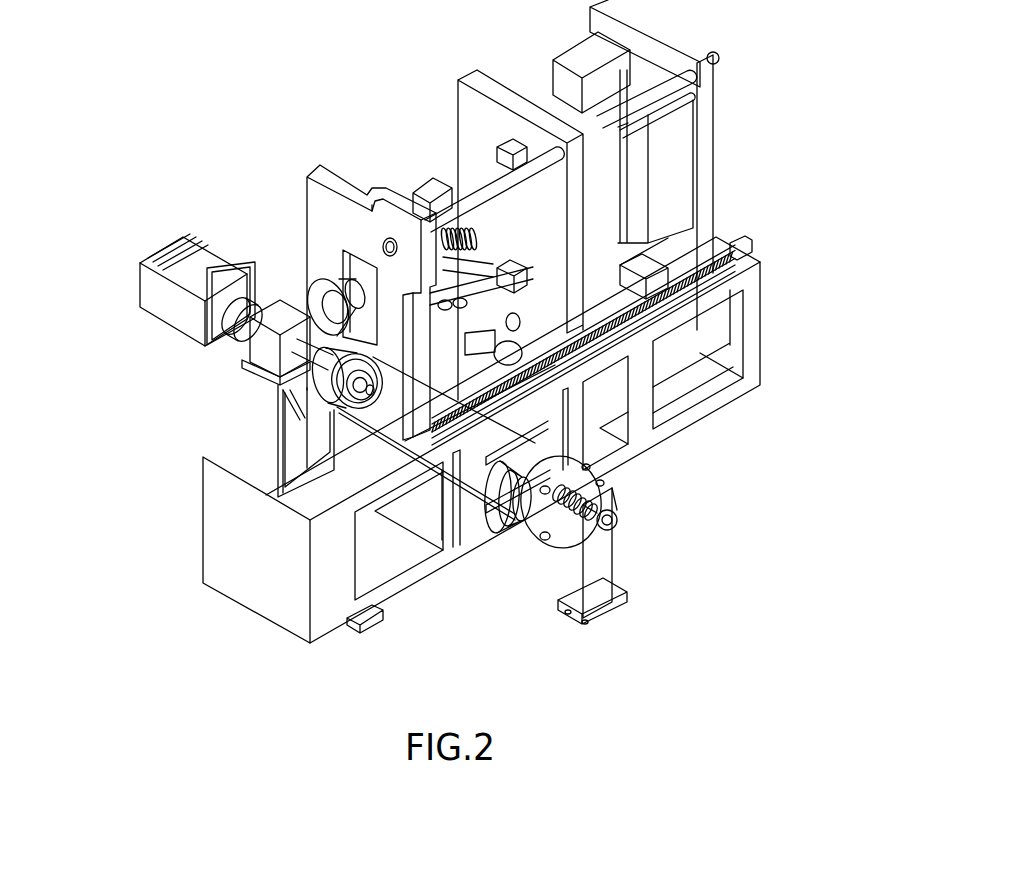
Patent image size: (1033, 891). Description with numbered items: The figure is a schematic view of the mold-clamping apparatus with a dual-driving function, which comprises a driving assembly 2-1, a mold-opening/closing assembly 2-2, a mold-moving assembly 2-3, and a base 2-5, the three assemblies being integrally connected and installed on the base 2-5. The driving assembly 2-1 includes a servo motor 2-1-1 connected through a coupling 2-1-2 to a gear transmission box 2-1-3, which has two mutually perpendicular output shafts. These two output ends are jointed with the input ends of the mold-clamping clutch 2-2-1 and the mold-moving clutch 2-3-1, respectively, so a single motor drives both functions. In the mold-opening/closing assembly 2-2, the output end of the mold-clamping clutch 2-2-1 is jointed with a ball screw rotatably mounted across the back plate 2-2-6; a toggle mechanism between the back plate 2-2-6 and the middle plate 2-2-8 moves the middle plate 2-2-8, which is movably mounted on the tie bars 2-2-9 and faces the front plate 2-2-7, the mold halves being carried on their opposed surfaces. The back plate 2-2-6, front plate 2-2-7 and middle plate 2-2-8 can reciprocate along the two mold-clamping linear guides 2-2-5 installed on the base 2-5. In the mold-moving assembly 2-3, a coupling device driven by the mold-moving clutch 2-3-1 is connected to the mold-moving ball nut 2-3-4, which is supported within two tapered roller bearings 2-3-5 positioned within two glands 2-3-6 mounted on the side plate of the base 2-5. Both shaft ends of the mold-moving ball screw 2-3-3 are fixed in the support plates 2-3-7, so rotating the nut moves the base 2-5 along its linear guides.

The driving assembly 2-1 is at (204, 340).
The servo motor 2-1-1 is at (183, 303).
The coupling 2-1-2 is at (247, 340).
The gear transmission box 2-1-3 is at (267, 347).
The mold-opening/closing assembly 2-2 is at (505, 220).
The mold-clamping clutch 2-2-1 is at (313, 300).
The mold-clamping linear guides 2-2-5 is at (740, 243).
The back plate 2-2-6 is at (338, 178).
The front plate 2-2-7 is at (705, 152).
The middle plate 2-2-8 is at (481, 88).
The tie bars 2-2-9 is at (647, 97).
The mold-moving assembly 2-3 is at (588, 499).
The mold-moving clutch 2-3-1 is at (275, 392).
The mold-moving ball screw 2-3-3 is at (590, 500).
The mold-moving ball nut 2-3-4 is at (550, 463).
The tapered roller bearings 2-3-5 is at (517, 515).
The glands 2-3-6 is at (563, 527).
The support plates 2-3-7 is at (607, 565).
The base 2-5 is at (337, 573).